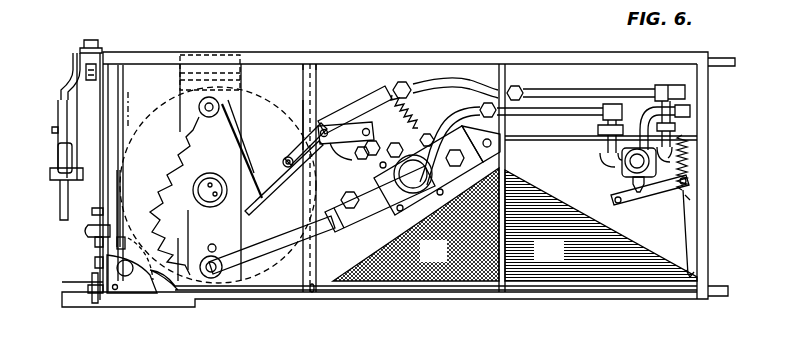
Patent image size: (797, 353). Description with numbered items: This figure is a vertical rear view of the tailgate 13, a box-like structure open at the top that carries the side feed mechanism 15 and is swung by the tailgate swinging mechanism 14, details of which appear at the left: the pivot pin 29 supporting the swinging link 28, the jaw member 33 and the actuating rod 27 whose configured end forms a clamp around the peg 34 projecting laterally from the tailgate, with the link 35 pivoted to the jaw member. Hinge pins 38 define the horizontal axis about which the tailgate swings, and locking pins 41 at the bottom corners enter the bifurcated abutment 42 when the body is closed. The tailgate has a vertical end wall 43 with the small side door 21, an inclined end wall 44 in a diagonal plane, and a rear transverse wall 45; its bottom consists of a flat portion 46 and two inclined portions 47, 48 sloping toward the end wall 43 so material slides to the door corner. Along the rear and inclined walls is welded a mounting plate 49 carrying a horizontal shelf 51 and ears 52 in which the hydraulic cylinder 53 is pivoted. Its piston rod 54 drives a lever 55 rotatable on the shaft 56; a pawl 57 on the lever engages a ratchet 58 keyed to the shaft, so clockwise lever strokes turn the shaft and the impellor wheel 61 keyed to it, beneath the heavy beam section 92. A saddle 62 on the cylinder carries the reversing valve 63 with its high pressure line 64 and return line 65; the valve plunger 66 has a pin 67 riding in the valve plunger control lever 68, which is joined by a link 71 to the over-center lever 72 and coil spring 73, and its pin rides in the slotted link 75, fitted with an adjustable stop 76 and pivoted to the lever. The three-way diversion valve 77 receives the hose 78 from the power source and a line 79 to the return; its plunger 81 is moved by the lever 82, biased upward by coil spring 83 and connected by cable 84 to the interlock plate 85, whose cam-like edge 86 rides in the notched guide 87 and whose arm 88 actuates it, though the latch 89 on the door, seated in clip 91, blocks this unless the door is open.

The tailgate 13 is at (268, 53).
The tailgate swinging mechanism 14 is at (58, 108).
The side feed mechanism 15 is at (323, 228).
The side door 21 is at (100, 267).
The actuating rod 27 is at (60, 199).
The swinging link 28 is at (62, 86).
The pivot pin 29 is at (70, 62).
The jaw member 33 is at (58, 155).
The peg 34 is at (50, 176).
The link 35 is at (52, 131).
The hinge pin 38 is at (736, 57).
The locking pin 41 is at (728, 291).
The bifurcated abutment 42 is at (96, 304).
The vertical end wall 43 is at (103, 198).
The inclined end wall 44 is at (570, 70).
The rear transverse wall 45 is at (286, 68).
The flat bottom portion 46 is at (263, 292).
The inclined bottom portion 47 is at (423, 259).
The inclined bottom portion 48 is at (538, 259).
The mounting plate 49 is at (508, 81).
The shelf 51 is at (601, 149).
The ears 52 is at (493, 148).
The hydraulic cylinder 53 is at (499, 201).
The piston rod 54 is at (278, 253).
The lever 55 is at (218, 185).
The shaft 56 is at (207, 176).
The pawl 57 is at (236, 125).
The ratchet 58 is at (162, 167).
The impellor wheel 61 is at (136, 101).
The saddle 62 is at (393, 185).
The reversing valve 63 is at (360, 123).
The high pressure hydraulic fluid line 64 is at (470, 113).
The return line 65 is at (452, 83).
The plunger 66 is at (355, 161).
The pin 67 is at (307, 183).
The valve plunger control lever 68 is at (305, 128).
The link 71 is at (343, 118).
The lever 72 is at (386, 87).
The coil spring 73 is at (409, 118).
The link 75 is at (300, 140).
The adjustable stop 76 is at (284, 157).
The three-way hydraulic diversion valve 77 is at (620, 170).
The hose 78 is at (692, 116).
The line 79 is at (612, 108).
The plunger 81 is at (633, 184).
The lever 82 is at (650, 200).
The coil spring 83 is at (690, 164).
The cable 84 is at (684, 216).
The interlock plate 85 is at (137, 281).
The cam-like edge 86 is at (145, 254).
The notched guide 87 is at (125, 241).
The arm 88 is at (118, 208).
The latch 89 is at (86, 229).
The clip 91 is at (97, 240).
The beam section 92 is at (178, 96).